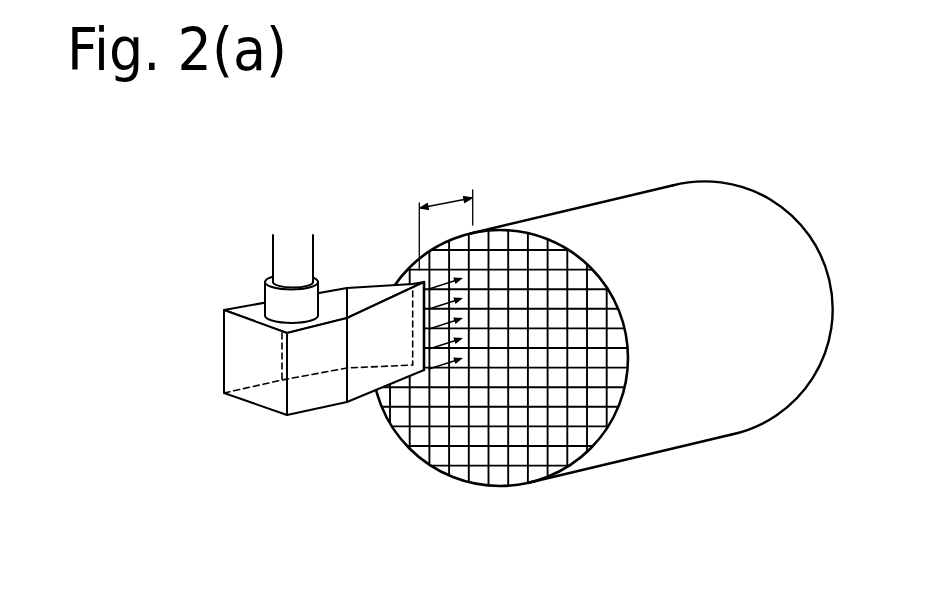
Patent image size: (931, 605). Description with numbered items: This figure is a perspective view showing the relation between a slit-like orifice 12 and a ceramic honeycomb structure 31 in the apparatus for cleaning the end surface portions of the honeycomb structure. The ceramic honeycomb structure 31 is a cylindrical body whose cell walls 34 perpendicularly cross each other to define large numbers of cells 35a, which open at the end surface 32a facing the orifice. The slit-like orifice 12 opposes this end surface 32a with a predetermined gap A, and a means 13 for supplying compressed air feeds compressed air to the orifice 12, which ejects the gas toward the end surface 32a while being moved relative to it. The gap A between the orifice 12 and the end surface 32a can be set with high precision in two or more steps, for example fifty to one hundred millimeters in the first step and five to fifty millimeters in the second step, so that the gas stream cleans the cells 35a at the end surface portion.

The slit-like orifice 12 is at (425, 275).
The means for supplying compressed air 13 is at (293, 226).
The ceramic honeycomb structure 31 is at (599, 338).
The end surface 32a is at (505, 260).
The cell walls 34 is at (500, 447).
The cells 35a is at (558, 417).
The gap A is at (442, 198).